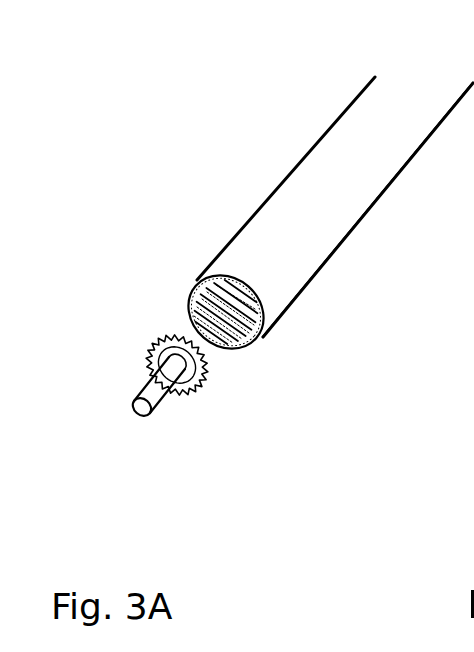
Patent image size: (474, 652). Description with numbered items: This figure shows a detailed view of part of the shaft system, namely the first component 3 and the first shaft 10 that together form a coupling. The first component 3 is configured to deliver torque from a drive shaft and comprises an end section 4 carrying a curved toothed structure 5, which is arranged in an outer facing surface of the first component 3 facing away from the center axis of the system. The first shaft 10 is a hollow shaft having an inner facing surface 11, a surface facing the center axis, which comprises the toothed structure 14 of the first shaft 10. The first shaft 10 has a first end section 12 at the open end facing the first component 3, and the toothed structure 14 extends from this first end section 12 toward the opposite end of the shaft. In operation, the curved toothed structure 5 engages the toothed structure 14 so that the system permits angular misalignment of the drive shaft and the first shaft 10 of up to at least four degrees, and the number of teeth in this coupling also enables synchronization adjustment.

The first shaft 10 is at (337, 118).
The inner facing surface 11 is at (215, 327).
The toothed structure 14 is at (200, 300).
The first end section 12 is at (282, 355).
The curved toothed structure 5 is at (153, 343).
The first component 3 is at (135, 398).
The end section 4 is at (199, 409).